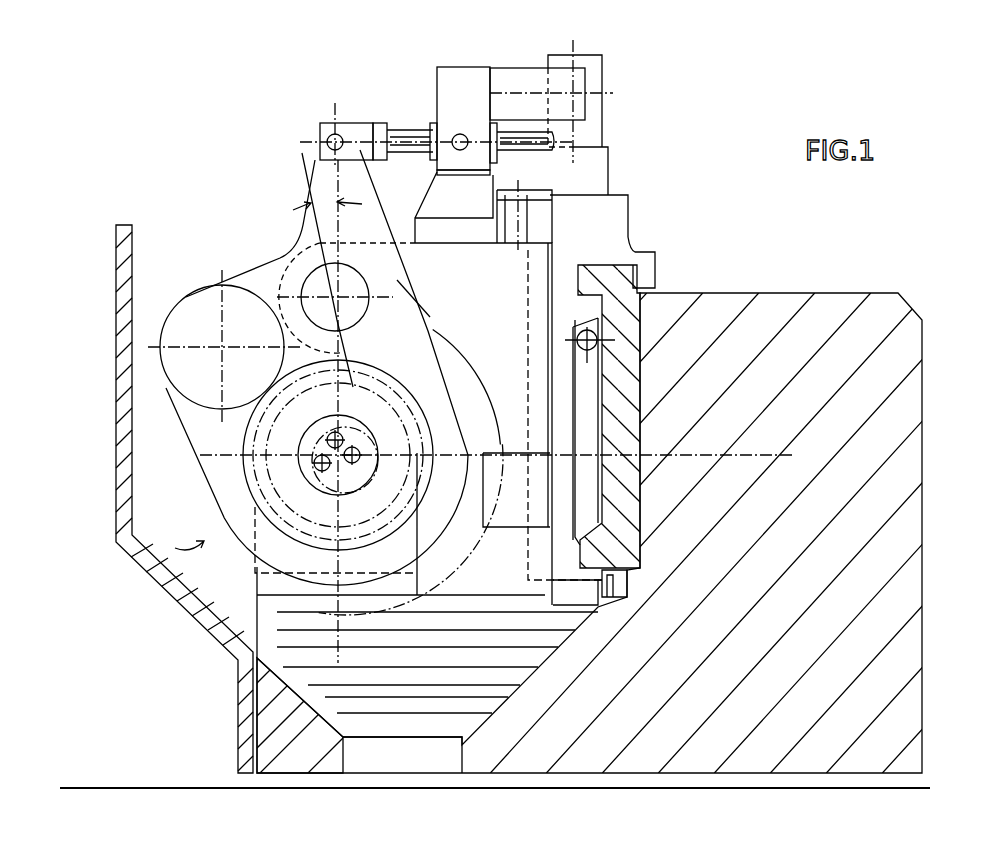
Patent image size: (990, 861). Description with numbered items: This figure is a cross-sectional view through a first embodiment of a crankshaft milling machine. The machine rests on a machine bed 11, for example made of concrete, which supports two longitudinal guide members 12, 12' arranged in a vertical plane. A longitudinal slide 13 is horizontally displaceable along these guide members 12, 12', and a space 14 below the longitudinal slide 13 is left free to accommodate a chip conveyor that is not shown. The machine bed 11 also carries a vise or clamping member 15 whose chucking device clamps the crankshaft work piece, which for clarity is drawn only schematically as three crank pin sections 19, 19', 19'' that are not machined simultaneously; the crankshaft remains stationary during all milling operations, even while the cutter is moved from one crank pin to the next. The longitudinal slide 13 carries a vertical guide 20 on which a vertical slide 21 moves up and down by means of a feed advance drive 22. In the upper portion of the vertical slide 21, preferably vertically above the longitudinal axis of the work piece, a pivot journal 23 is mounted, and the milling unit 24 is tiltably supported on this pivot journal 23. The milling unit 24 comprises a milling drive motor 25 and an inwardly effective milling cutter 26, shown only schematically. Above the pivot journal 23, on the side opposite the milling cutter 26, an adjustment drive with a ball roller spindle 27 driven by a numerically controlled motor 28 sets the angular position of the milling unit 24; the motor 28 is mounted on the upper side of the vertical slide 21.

The machine bed 11 is at (900, 412).
The longitudinal guide member 12 is at (627, 416).
The longitudinal guide member 12' is at (647, 567).
The longitudinal slide 13 is at (615, 235).
The space 14 is at (468, 768).
The vise or clamping member 15 is at (252, 567).
The crank pin section 19 is at (372, 435).
The crank pin section 19' is at (355, 423).
The crank pin section 19'' is at (310, 483).
The vertical guide 20 is at (540, 213).
The vertical slide 21 is at (480, 294).
The feed advance drive 22 is at (597, 127).
The pivot journal 23 is at (315, 285).
The milling unit 24 is at (182, 536).
The milling drive motor 25 is at (178, 315).
The milling cutter 26 is at (273, 447).
The ball roller spindle 27 is at (403, 126).
The numerically controlled motor 28 is at (506, 70).